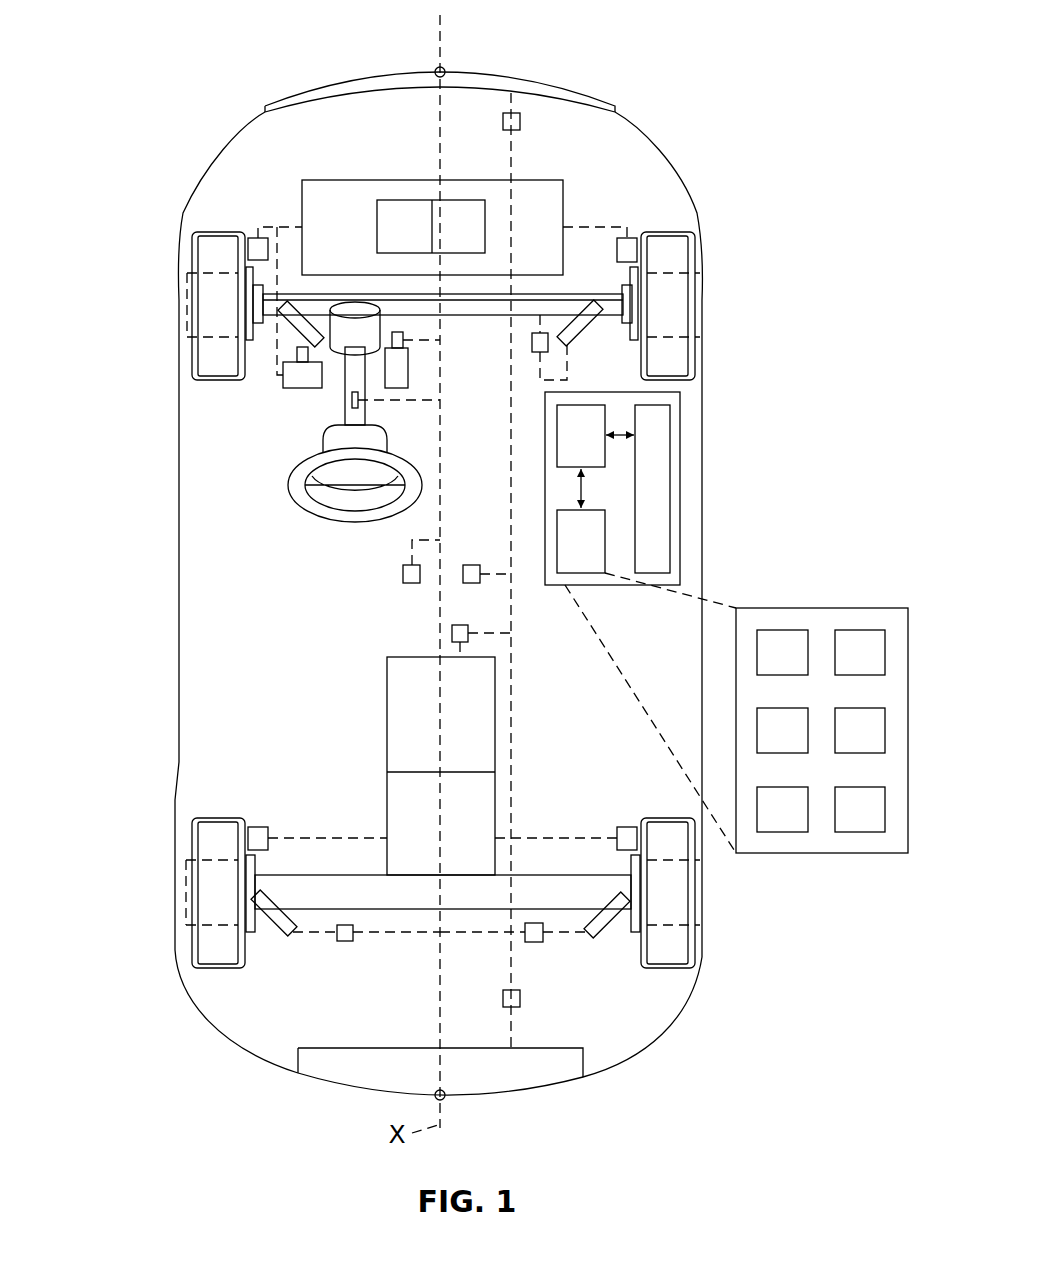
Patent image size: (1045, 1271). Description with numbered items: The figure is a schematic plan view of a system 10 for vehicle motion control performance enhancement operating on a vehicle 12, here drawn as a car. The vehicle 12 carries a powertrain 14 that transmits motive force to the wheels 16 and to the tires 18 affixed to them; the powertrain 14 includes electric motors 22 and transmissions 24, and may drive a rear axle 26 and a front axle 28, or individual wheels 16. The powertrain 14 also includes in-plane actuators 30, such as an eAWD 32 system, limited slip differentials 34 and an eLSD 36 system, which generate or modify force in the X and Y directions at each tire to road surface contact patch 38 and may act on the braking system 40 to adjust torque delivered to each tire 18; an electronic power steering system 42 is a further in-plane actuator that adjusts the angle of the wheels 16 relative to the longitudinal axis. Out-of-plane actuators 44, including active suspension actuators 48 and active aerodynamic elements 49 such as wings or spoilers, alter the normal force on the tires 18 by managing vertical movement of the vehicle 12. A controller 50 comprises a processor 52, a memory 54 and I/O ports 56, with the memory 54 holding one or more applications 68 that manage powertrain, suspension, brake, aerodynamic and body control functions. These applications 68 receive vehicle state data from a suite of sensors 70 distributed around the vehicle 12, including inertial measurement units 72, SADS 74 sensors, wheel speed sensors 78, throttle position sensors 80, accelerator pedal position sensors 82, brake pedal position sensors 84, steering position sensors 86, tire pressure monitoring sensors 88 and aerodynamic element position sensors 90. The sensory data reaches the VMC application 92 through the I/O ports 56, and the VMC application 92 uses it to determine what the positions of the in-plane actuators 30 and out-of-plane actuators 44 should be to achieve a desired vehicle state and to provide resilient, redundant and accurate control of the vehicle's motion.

The system 10 is at (482, 572).
The vehicle 12 is at (686, 162).
The powertrain 14 is at (414, 445).
The wheels 16 is at (440, 600).
The tires 18 is at (440, 600).
The electric motors 22 is at (414, 500).
The transmissions 24 is at (393, 200).
The rear axle 26 is at (555, 897).
The front axle 28 is at (392, 294).
The in-plane actuators 30 is at (414, 500).
The electric all-wheel drive (eAWD) system 32 is at (414, 500).
The limited slip differentials 34 is at (414, 500).
The electric limited slip differential (eLSD) system 36 is at (414, 500).
The tire to road surface contact patch 38 is at (195, 322).
The braking system 40 is at (250, 303).
The electronic power steering (EPS) system 42 is at (323, 427).
The out-of-plane actuators 44 is at (483, 576).
The active suspension actuators 48 is at (483, 655).
The active aerodynamic elements 49 is at (366, 80).
The controllers 50 is at (680, 452).
The processor 52 is at (483, 576).
The memory 54 is at (557, 533).
The input/output (I/O) ports 56 is at (670, 510).
The applications 68 is at (769, 666).
The sensors 70 is at (442, 504).
The inertial measurement units 72 is at (403, 572).
The Semi Active Damping Suspension (SADS) sensors 74 is at (297, 332).
The wheel speed sensors 78 is at (442, 504).
The throttle position sensors 80 is at (442, 361).
The accelerator pedal position sensors 82 is at (408, 372).
The brake pedal position sensors 84 is at (283, 375).
The steering position sensors 86 is at (345, 400).
The tire pressure monitoring sensors 88 is at (257, 238).
The aerodynamic element position sensors 90 is at (512, 113).
The VMC application 92 is at (847, 666).